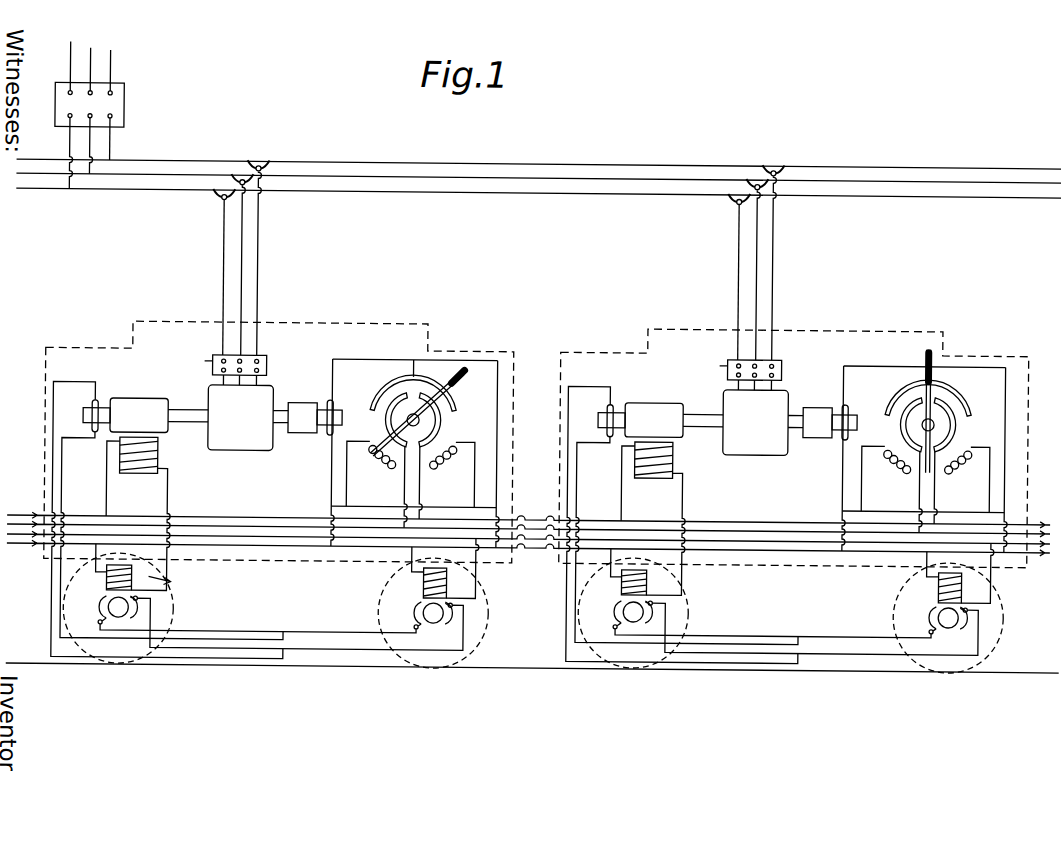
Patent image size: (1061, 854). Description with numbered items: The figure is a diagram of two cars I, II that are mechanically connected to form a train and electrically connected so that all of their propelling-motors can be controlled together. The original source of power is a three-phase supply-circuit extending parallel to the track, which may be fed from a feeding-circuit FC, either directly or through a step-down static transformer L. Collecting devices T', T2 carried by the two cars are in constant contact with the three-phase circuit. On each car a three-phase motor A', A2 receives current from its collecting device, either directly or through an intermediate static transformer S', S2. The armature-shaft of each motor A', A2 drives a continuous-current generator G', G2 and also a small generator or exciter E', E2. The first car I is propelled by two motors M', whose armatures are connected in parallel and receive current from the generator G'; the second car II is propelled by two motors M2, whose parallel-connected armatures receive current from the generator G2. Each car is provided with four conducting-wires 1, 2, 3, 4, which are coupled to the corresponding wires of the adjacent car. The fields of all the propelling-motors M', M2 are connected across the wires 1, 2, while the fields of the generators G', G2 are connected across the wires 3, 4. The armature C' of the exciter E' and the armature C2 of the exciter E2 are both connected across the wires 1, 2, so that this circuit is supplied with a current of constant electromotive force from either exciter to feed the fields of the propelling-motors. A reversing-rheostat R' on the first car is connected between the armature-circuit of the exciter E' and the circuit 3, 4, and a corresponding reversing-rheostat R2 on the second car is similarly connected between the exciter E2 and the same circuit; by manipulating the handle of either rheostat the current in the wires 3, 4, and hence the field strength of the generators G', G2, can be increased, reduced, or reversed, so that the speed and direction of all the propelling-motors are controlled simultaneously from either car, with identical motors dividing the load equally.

The feeding-circuit FC is at (90, 58).
The step-down static transformer L is at (126, 104).
The collecting device T' is at (241, 246).
The collecting device T2 is at (756, 251).
The static transformer S' is at (205, 369).
The static transformer S2 is at (721, 374).
The motor A' is at (241, 418).
The motor A2 is at (756, 423).
The continuous-current generator G' is at (126, 427).
The continuous-current generator G2 is at (641, 432).
The exciter E' is at (302, 409).
The exciter E2 is at (817, 414).
The armature of exciter C' is at (337, 417).
The armature of exciter C2 is at (854, 422).
The reversing-rheostat R' is at (416, 453).
The reversing-rheostat R2 is at (925, 451).
The propelling-motors M' is at (276, 602).
The propelling-motors M2 is at (791, 606).
The car I is at (279, 441).
The car II is at (794, 447).
The conducting-wire 1 is at (739, 548).
The conducting-wire 2 is at (762, 539).
The conducting-wire 3 is at (781, 529).
The conducting-wire 4 is at (800, 520).